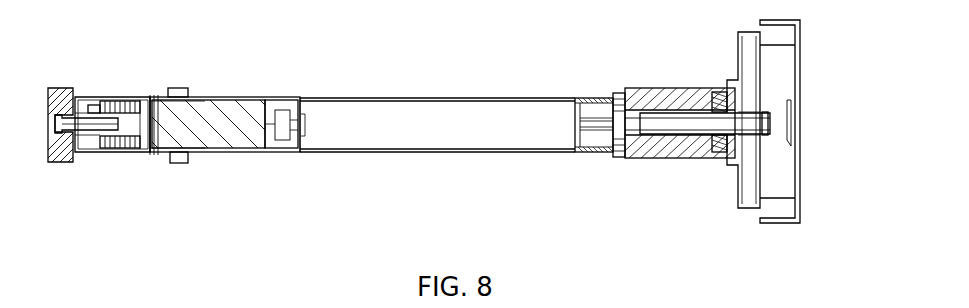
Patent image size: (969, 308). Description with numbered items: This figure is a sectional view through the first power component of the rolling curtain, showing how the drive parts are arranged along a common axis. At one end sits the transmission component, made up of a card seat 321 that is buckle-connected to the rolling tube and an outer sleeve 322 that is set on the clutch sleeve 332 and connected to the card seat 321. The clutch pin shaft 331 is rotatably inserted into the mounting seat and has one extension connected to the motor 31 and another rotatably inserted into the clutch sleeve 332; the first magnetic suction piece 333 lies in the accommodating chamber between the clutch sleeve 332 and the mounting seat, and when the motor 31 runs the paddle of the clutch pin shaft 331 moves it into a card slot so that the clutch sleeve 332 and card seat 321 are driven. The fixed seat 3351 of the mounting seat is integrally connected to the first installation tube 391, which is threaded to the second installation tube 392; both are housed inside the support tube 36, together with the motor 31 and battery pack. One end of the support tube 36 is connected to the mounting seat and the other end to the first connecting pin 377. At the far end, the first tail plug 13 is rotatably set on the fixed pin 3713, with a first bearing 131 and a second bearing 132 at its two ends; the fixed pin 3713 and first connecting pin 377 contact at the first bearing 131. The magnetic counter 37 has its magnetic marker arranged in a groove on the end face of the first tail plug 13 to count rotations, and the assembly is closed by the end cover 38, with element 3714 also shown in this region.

The card seat 321 is at (60, 88).
The outer sleeve 322 is at (113, 97).
The first magnetic suction piece 333 is at (93, 105).
The clutch pin shaft 331 is at (128, 101).
The fixed seat 3351 is at (118, 150).
The clutch sleeve 332 is at (82, 155).
The first installation tube 391 is at (178, 88).
The second installation tube 392 is at (248, 97).
The motor 31 is at (242, 148).
The support tube 36 is at (420, 98).
The first connecting pin 377 is at (592, 98).
The first bearing 131 is at (622, 157).
The first tail plug 13 is at (658, 92).
The fixed pin 3713 is at (650, 134).
The second bearing 132 is at (718, 152).
The magnetic counter 37 is at (725, 76).
The shaft end 3714 is at (770, 122).
The end cover 38 is at (795, 150).